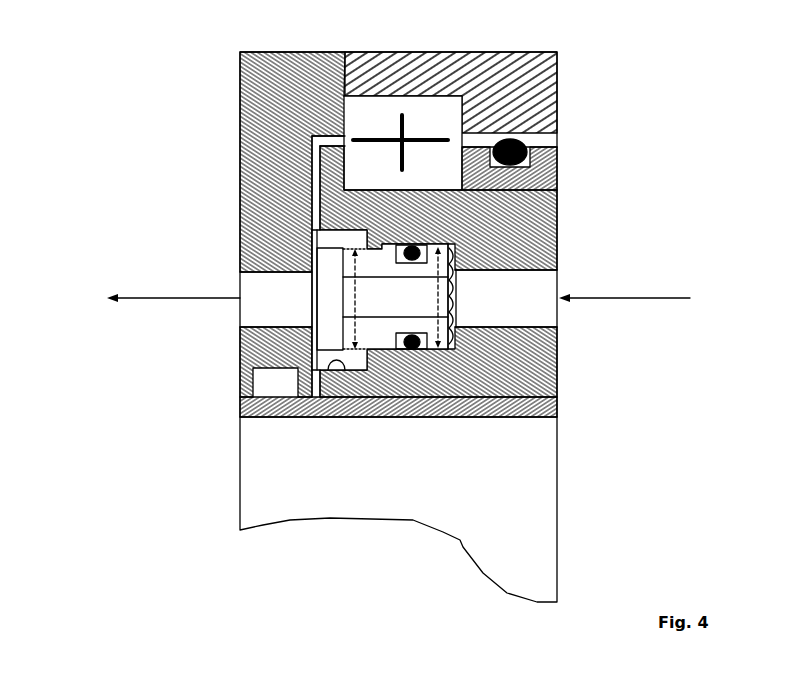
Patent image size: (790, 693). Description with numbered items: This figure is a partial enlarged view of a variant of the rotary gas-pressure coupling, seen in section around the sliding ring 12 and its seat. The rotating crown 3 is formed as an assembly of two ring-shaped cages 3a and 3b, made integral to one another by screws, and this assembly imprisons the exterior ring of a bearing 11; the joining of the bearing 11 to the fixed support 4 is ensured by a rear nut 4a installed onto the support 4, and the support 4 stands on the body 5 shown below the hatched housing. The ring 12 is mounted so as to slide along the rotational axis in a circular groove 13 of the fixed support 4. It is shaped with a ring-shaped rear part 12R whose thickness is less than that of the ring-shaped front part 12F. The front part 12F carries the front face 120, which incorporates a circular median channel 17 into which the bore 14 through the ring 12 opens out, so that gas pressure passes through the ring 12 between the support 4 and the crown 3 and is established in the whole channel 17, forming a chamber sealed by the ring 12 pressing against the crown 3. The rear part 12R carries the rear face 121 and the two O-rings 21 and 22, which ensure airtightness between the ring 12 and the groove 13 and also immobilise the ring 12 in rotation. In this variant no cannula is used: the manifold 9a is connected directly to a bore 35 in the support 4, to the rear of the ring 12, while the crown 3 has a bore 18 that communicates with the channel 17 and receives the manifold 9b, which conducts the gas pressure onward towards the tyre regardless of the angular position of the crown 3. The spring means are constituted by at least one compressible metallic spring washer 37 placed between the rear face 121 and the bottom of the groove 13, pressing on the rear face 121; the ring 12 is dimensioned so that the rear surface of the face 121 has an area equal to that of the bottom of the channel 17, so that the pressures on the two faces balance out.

The rotating crown 3 is at (325, 234).
The ring-shaped cage 3a is at (255, 85).
The ring-shaped cage 3b is at (557, 52).
The fixed support 4 is at (525, 400).
The rear nut 4a is at (543, 178).
The base block 5 is at (106, 402).
The manifold 9a is at (690, 298).
The manifold 9b is at (147, 298).
The bearing 11 is at (403, 143).
The ring 12 is at (383, 338).
The front part 12F is at (296, 210).
The rear part 12R is at (383, 251).
The circular groove 13 is at (323, 373).
The bore 14 is at (407, 307).
The circular median channel 17 is at (330, 299).
The bore 18 is at (257, 315).
The O-ring 21 is at (412, 347).
The O-ring 22 is at (450, 245).
The bore 35 is at (525, 318).
The compressible metallic spring washer 37 is at (468, 278).
The front face 120 is at (306, 245).
The rear face 121 is at (458, 335).